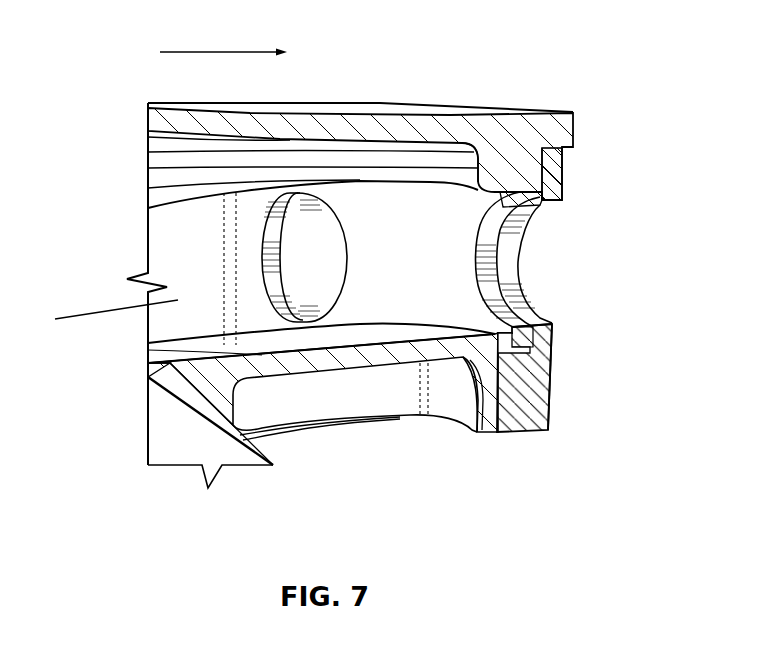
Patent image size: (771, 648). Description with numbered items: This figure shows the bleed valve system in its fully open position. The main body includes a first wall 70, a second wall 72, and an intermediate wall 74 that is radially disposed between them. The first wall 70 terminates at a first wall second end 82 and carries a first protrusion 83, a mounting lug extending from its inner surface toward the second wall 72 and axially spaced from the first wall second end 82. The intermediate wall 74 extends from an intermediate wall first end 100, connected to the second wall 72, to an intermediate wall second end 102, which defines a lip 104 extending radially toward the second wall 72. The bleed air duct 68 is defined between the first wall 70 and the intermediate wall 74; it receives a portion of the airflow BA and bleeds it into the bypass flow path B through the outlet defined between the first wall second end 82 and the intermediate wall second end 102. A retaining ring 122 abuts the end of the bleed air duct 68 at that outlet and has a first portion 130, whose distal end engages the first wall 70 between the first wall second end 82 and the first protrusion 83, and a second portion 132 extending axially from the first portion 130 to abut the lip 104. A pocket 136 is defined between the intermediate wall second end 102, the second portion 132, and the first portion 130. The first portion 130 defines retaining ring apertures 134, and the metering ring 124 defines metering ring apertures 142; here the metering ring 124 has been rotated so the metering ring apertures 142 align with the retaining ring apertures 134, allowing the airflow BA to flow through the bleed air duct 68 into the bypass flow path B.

The bypass flow path B is at (217, 52).
The airflow BA is at (107, 312).
The bleed air duct 68 is at (167, 152).
The first wall 70 is at (363, 108).
The second wall 72 is at (237, 455).
The intermediate wall 74 is at (325, 385).
The first wall second end 82 is at (563, 124).
The first protrusion 83 is at (488, 160).
The intermediate wall first end 100 is at (293, 366).
The intermediate wall second end 102 is at (447, 351).
The lip 104 is at (503, 365).
The retaining ring 122 is at (560, 338).
The metering ring 124 is at (170, 228).
The first portion 130 is at (552, 168).
The second portion 132 is at (540, 397).
The retaining ring apertures 134 is at (318, 256).
The pocket 136 is at (548, 402).
The metering ring apertures 142 is at (275, 288).